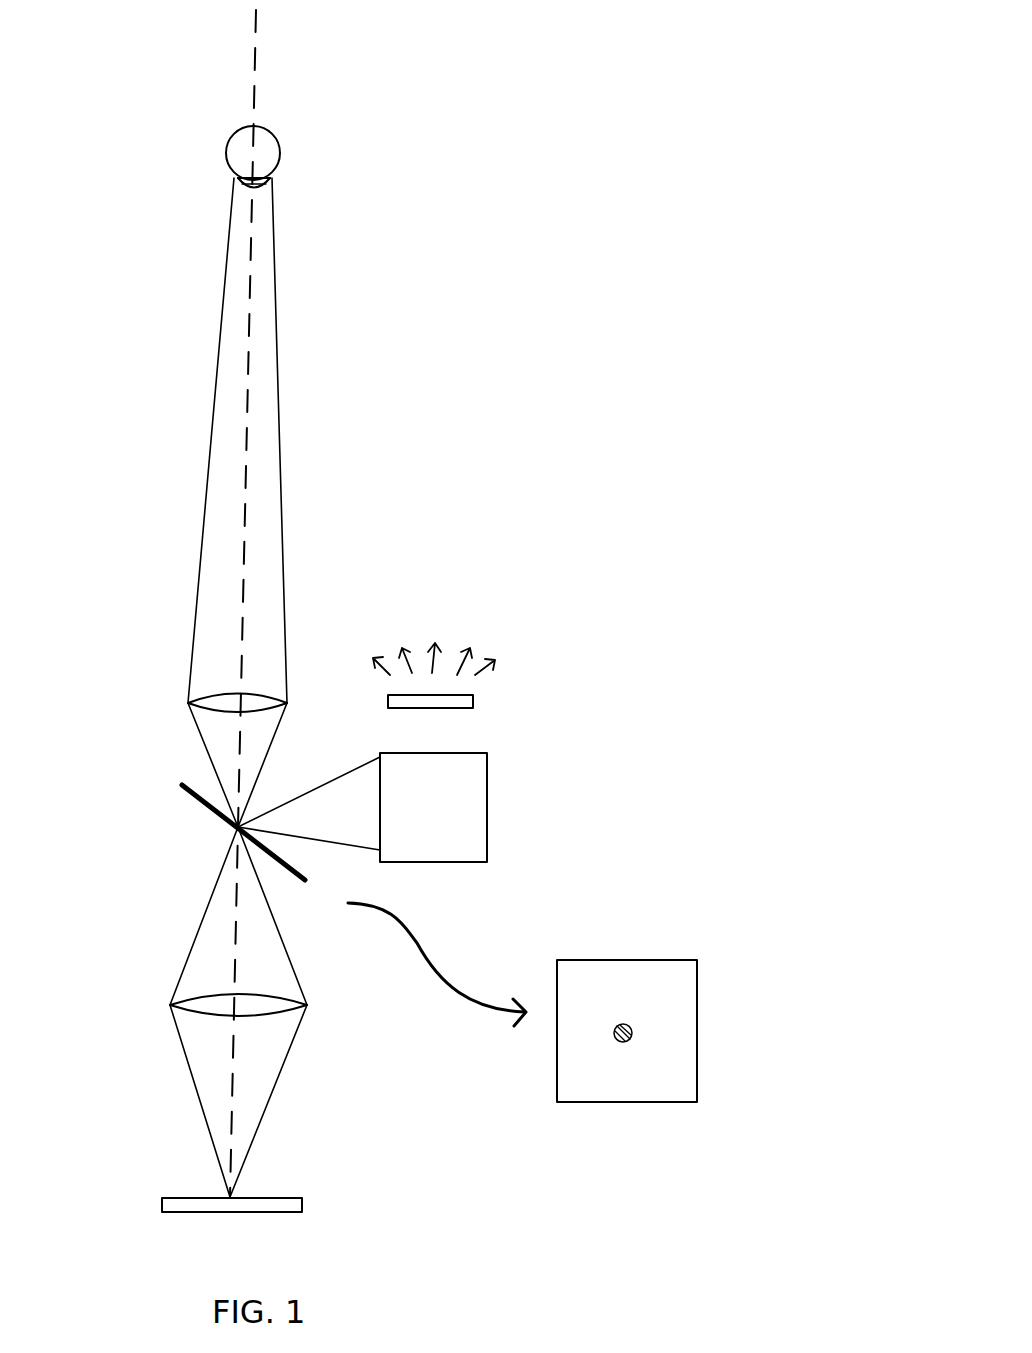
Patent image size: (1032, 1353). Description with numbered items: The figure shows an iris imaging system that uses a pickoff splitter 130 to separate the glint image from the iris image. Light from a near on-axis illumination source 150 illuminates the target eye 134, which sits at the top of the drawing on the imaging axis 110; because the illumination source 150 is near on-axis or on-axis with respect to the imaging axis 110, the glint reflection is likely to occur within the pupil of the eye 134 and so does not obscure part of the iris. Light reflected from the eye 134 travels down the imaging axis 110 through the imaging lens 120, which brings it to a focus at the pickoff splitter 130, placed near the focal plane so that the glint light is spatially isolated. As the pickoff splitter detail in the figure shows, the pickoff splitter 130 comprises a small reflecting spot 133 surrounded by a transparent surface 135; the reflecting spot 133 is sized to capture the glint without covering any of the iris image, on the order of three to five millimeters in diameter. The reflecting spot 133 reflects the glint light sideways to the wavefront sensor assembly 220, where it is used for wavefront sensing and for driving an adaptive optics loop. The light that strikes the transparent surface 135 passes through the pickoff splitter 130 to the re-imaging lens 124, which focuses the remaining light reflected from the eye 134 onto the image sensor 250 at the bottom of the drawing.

The imaging axis 110 is at (252, 385).
The target eye 134 is at (281, 146).
The imaging lens 120 is at (188, 703).
The re-imaging lens 124 is at (170, 1005).
The pickoff splitter 130 is at (184, 785).
The reflecting spot 133 is at (632, 1033).
The transparent surface 135 is at (678, 1083).
The illumination source 150 is at (473, 698).
The wavefront sensor assembly 220 is at (362, 807).
The image sensor 250 is at (302, 1205).